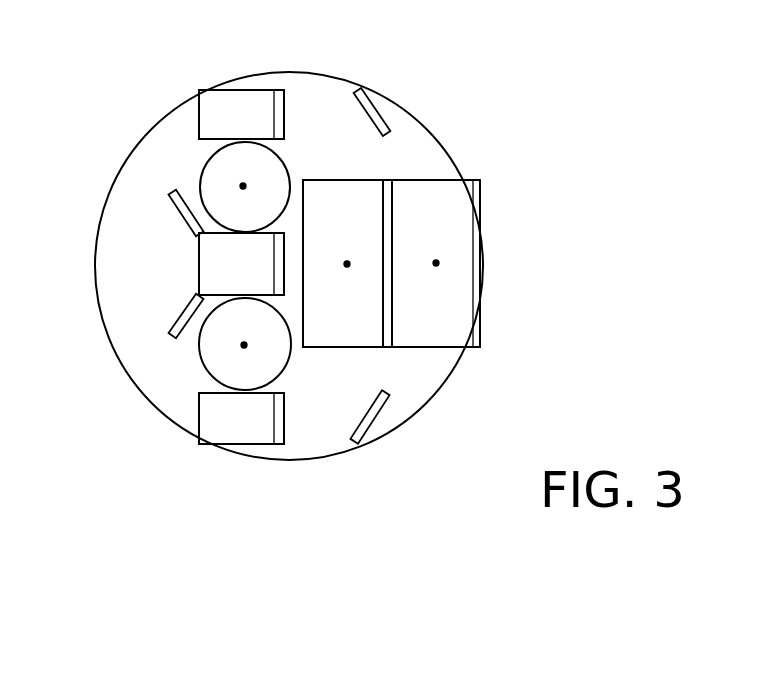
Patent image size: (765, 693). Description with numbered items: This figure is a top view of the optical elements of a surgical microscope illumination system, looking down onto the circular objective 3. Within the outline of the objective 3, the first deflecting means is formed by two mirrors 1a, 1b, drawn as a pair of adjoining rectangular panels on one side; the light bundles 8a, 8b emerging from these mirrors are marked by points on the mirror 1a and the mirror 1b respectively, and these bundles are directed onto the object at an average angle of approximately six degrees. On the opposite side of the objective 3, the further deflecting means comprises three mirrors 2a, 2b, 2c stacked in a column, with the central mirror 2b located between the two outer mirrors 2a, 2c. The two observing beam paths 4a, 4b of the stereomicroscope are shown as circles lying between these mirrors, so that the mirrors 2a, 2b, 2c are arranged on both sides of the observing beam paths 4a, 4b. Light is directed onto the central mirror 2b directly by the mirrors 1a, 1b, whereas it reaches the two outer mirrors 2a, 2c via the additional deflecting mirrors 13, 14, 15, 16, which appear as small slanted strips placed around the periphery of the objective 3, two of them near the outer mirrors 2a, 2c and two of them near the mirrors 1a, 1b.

The objective 3 is at (303, 80).
The mirror 1a is at (362, 193).
The mirror 1b is at (447, 220).
The outer mirror 2a is at (213, 430).
The central mirror 2b is at (213, 273).
The outer mirror 2c is at (206, 117).
The observing beam path 4a is at (244, 345).
The observing beam path 4b is at (243, 186).
The light bundle 8a is at (347, 264).
The light bundle 8b is at (436, 263).
The additional deflecting mirror 13 is at (177, 322).
The additional deflecting mirror 14 is at (383, 408).
The additional deflecting mirror 15 is at (170, 203).
The additional deflecting mirror 16 is at (378, 118).